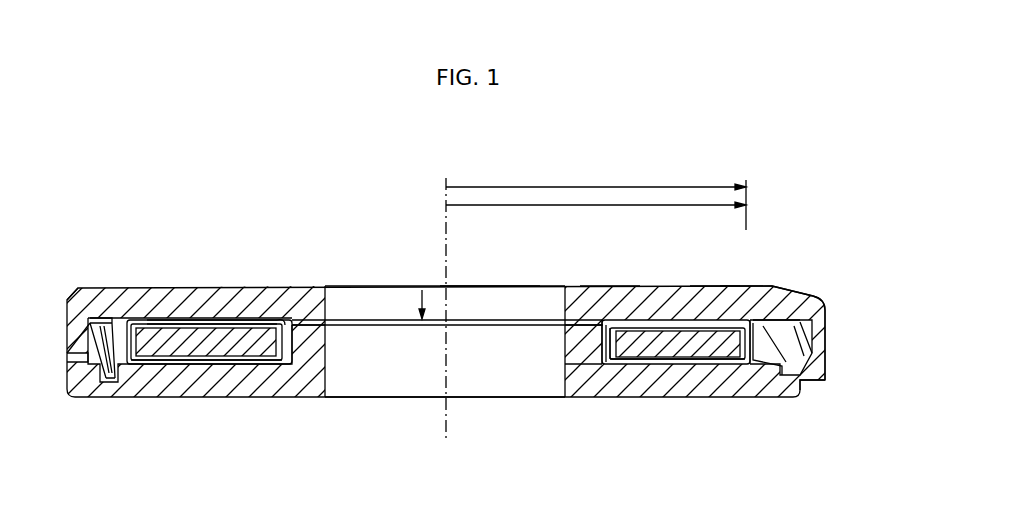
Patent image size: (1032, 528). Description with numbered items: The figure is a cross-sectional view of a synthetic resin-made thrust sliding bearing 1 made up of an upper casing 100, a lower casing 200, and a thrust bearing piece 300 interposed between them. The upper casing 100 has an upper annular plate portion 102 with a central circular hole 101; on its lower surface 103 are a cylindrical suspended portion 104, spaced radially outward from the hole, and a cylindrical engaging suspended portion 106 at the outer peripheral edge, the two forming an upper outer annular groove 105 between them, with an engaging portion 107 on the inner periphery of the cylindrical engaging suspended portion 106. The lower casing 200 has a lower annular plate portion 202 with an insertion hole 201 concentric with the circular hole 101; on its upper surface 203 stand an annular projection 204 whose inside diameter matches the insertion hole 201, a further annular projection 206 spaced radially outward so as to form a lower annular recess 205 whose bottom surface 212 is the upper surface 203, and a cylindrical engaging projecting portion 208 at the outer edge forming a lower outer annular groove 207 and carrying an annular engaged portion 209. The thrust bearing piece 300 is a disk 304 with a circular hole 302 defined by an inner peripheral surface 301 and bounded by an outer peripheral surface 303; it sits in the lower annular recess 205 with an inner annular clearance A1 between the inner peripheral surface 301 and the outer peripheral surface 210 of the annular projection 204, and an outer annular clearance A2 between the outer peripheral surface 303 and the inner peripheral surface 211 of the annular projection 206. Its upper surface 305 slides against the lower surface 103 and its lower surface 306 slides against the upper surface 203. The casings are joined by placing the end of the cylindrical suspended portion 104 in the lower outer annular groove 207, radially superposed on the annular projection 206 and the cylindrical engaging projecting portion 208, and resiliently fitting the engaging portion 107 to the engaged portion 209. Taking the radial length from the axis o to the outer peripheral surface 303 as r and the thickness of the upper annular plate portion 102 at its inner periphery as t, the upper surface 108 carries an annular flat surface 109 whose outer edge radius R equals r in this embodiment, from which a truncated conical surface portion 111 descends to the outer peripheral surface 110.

The synthetic resin-made thrust sliding bearing 1 is at (366, 279).
The upper casing 100 is at (671, 298).
The circular hole 101 is at (490, 288).
The upper annular plate portion 102 is at (587, 289).
The lower surface 103 is at (740, 286).
The cylindrical suspended portion 104 is at (778, 292).
The upper outer annular groove 105 is at (820, 312).
The cylindrical engaging suspended portion 106 is at (818, 332).
The engaging portion 107 is at (807, 370).
The upper surface 108 is at (609, 298).
The annular flat surface 109 is at (716, 296).
The outer peripheral surface 110 is at (825, 352).
The truncated conical surface portion 111 is at (773, 284).
The lower casing 200 is at (303, 384).
The insertion hole 201 is at (412, 385).
The lower annular plate portion 202 is at (235, 360).
The upper surface 203 is at (183, 355).
The annular projection 204 is at (310, 351).
The lower annular recess 205 is at (205, 288).
The annular projection 206 is at (135, 287).
The lower outer annular groove 207 is at (118, 380).
The cylindrical engaging projecting portion 208 is at (99, 383).
The annular engaged portion 209 is at (100, 380).
The outer peripheral surface 210 is at (290, 288).
The inner peripheral surface 211 is at (155, 289).
The bottom surface 212 is at (242, 367).
The thrust bearing piece 300 is at (686, 360).
The inner peripheral surface 301 is at (592, 340).
The circular hole 302 is at (522, 318).
The outer peripheral surface 303 is at (780, 365).
The disk 304 is at (710, 362).
The upper surface 305 is at (648, 316).
The lower surface 306 is at (642, 362).
The inner annular clearance A1 is at (603, 352).
The outer annular clearance A2 is at (750, 358).
The axis o is at (445, 225).
The radial length r is at (532, 187).
The radius R is at (623, 205).
The thickness t is at (420, 286).